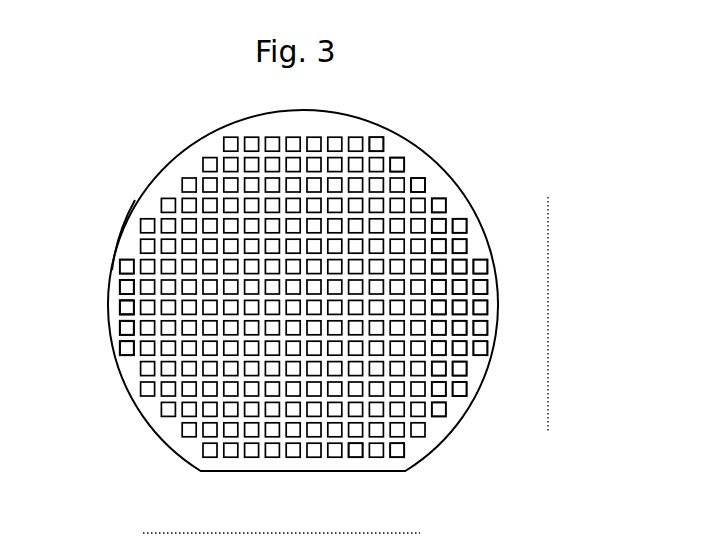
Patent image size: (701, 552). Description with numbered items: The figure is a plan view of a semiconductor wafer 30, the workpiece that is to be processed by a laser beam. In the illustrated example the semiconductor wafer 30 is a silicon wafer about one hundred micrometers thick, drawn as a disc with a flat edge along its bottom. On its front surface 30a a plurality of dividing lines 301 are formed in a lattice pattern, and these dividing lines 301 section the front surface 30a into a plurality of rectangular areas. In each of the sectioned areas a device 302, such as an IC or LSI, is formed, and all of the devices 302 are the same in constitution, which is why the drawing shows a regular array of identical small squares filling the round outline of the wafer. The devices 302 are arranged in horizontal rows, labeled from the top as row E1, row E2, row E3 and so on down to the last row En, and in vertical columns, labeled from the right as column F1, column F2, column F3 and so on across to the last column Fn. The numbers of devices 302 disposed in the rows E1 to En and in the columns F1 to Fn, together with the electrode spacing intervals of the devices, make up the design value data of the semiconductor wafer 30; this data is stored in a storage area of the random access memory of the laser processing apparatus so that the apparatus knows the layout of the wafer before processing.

The semiconductor wafer 30 is at (453, 113).
The front surface 30a is at (130, 237).
The dividing lines 301 is at (127, 334).
The device 302 is at (129, 286).
The row E1 is at (393, 144).
The row E2 is at (411, 165).
The row E3 is at (432, 186).
The row En is at (411, 449).
The column F1 is at (480, 366).
The column F2 is at (459, 406).
The column F3 is at (439, 426).
The column Fn is at (126, 364).